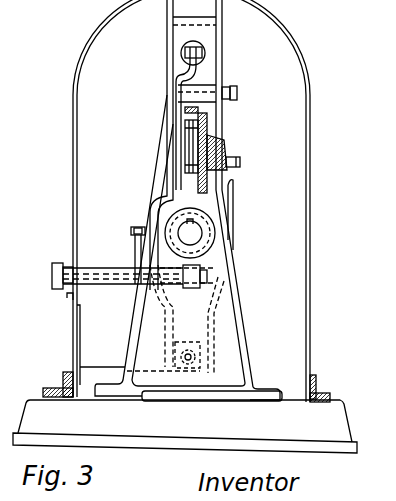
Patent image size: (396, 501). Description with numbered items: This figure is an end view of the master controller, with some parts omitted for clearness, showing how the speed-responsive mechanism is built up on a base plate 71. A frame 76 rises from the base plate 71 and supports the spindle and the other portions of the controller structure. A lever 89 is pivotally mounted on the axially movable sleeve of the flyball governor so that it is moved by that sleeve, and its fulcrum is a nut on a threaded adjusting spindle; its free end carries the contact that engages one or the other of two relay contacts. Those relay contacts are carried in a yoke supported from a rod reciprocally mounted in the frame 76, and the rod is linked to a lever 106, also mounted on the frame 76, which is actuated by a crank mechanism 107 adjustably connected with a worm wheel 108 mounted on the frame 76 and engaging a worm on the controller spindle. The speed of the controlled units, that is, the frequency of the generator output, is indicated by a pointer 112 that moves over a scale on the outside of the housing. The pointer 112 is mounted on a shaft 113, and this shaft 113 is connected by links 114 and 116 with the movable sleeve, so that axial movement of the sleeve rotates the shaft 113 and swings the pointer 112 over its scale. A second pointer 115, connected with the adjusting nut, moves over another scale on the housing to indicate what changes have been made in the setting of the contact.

The base plate 71 is at (338, 411).
The frame 76 is at (167, 16).
The lever 89 is at (230, 211).
The lever 106 is at (181, 80).
The crank mechanism 107 is at (185, 161).
The worm wheel 108 is at (207, 117).
The pointer 112 is at (73, 186).
The shaft 113 is at (206, 277).
The link 114 is at (136, 254).
The second pointer 115 is at (67, 300).
The link 116 is at (142, 228).